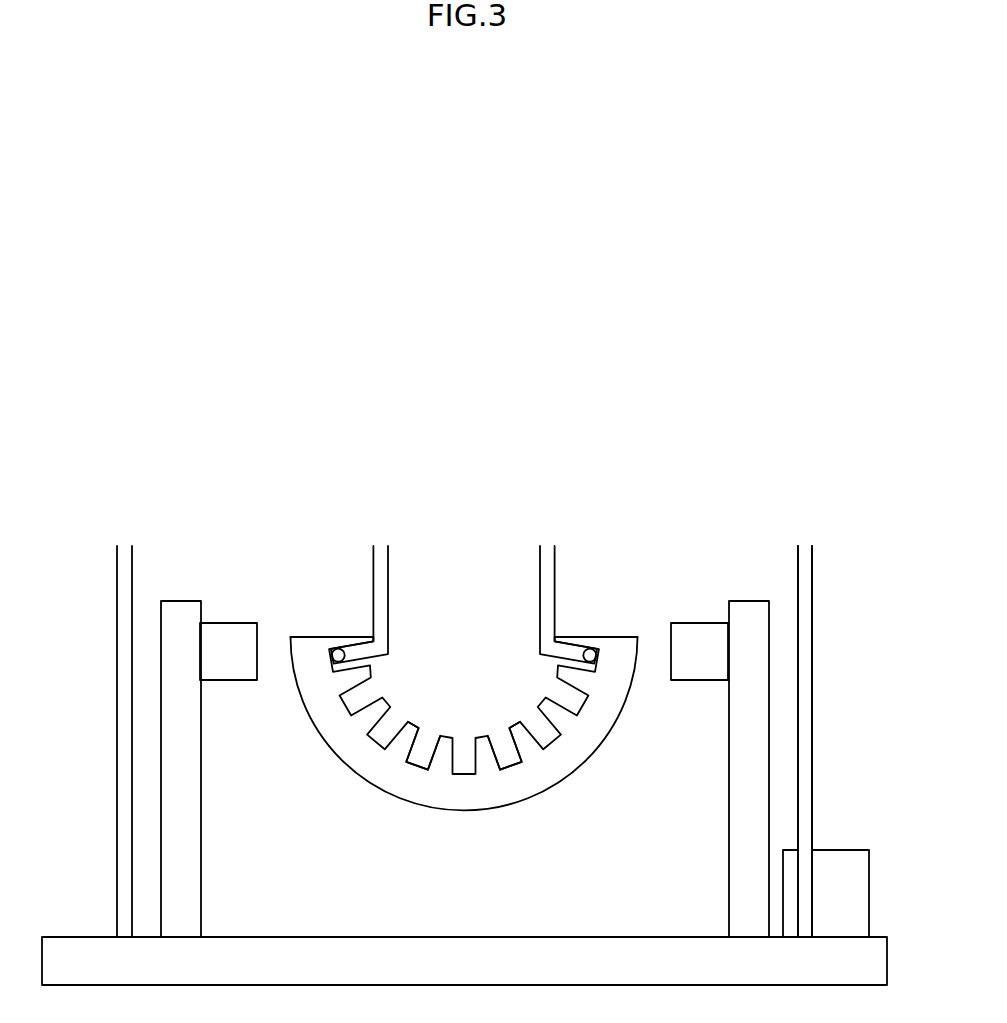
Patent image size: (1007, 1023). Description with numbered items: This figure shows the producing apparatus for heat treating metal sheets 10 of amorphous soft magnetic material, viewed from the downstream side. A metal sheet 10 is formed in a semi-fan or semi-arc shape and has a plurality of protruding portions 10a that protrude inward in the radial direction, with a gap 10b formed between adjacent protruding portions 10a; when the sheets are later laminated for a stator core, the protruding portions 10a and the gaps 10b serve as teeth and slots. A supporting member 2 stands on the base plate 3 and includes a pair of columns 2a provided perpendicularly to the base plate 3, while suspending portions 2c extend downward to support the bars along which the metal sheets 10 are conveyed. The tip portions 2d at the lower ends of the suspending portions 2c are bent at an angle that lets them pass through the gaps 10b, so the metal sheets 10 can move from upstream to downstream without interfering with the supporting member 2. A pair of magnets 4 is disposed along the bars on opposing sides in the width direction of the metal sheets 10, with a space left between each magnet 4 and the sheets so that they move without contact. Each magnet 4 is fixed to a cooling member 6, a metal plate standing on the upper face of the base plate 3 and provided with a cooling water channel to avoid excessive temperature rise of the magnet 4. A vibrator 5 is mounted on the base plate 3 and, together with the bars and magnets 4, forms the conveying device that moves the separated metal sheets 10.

The supporting member 2 is at (811, 574).
The column 2a is at (812, 673).
The suspending portion 2c is at (548, 574).
The tip portion 2d is at (574, 652).
The base plate 3 is at (868, 963).
The magnet 4 is at (229, 625).
The vibrator 5 is at (852, 893).
The cooling member 6 is at (193, 799).
The metal sheet 10 is at (498, 793).
The protruding portion 10a is at (520, 732).
The gap 10b is at (428, 740).